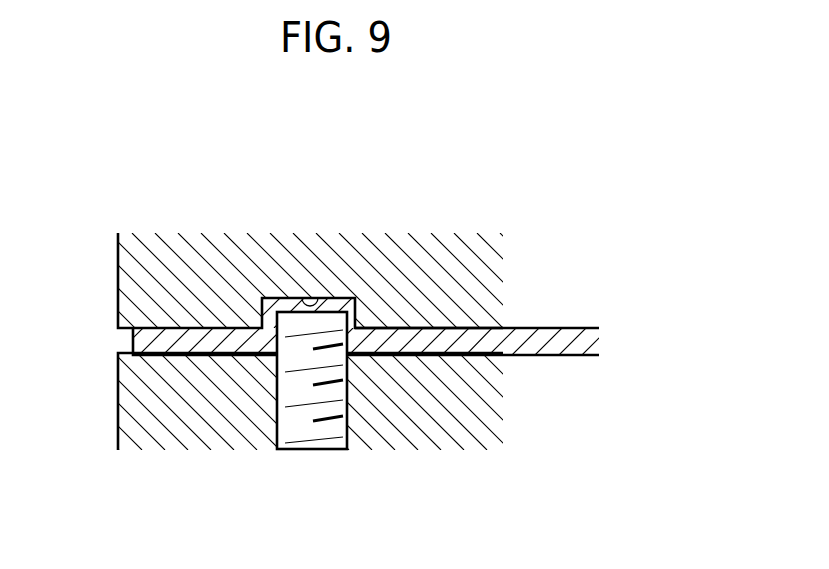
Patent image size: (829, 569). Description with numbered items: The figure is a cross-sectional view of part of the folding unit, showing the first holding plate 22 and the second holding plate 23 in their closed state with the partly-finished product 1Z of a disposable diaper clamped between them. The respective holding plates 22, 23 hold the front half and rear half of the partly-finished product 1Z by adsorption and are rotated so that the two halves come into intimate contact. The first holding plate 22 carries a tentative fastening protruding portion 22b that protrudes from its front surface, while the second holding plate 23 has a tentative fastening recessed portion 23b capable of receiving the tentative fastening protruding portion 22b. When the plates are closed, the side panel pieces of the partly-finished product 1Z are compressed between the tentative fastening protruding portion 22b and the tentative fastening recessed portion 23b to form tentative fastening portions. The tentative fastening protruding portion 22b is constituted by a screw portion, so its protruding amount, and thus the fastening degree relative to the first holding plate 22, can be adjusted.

The second holding plate 23 is at (138, 271).
The first holding plate 22 is at (138, 393).
The partly-finished product 1Z is at (580, 339).
The tentative fastening recessed portion 23b is at (322, 298).
The tentative fastening protruding portion 22b is at (313, 447).